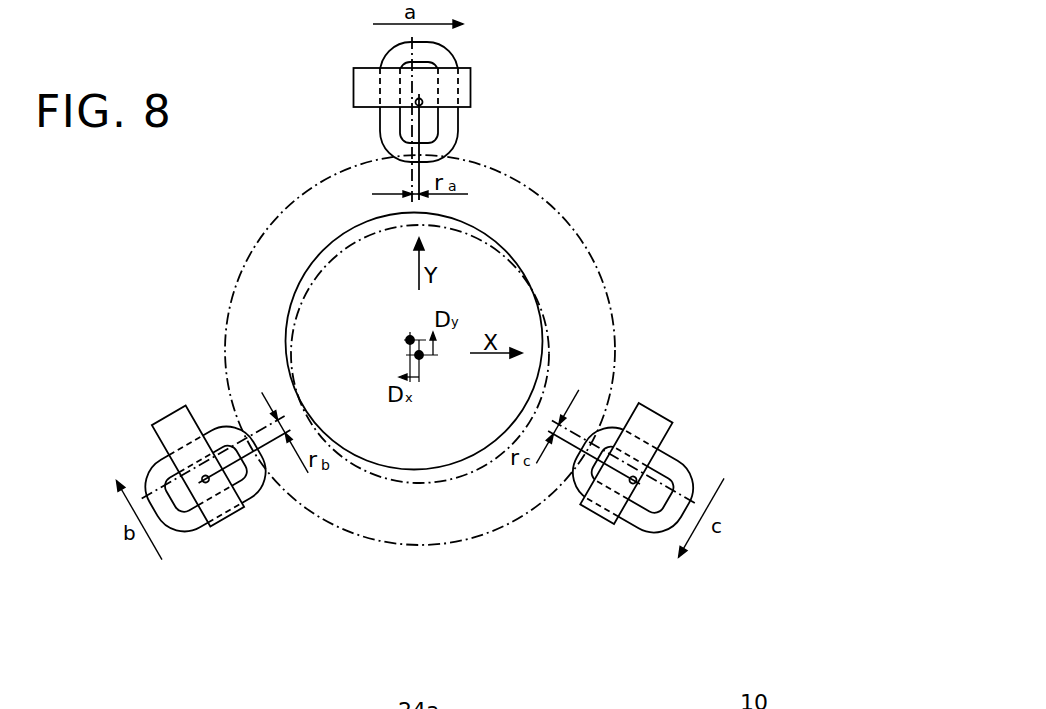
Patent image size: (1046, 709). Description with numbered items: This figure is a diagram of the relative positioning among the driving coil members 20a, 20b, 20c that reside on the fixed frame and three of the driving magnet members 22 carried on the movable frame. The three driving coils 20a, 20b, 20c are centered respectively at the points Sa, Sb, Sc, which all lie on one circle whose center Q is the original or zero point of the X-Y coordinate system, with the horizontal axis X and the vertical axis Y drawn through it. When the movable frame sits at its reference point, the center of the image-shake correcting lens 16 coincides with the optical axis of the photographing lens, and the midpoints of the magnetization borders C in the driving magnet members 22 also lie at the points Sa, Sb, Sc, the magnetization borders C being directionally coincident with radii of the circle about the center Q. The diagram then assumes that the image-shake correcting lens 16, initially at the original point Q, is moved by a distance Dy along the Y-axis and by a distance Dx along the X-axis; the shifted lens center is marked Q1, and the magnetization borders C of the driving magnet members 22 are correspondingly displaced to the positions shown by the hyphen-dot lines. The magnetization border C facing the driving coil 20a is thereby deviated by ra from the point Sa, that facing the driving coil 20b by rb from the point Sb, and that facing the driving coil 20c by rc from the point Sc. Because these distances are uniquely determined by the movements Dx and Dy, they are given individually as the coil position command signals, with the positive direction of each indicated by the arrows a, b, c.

The image-shake correcting lens 16 is at (318, 250).
The driving coil member 20a is at (381, 135).
The driving coil member 20b is at (225, 427).
The driving coil member 20c is at (648, 528).
The driving magnet member 22 is at (352, 88).
The center point of driving coil 20a Sa is at (423, 102).
The center point of driving coil 20b Sb is at (228, 512).
The center point of driving coil 20c Sc is at (596, 513).
The magnetization border C is at (411, 38).
The center of the circle Q is at (419, 355).
The rotor center Q1 is at (410, 340).